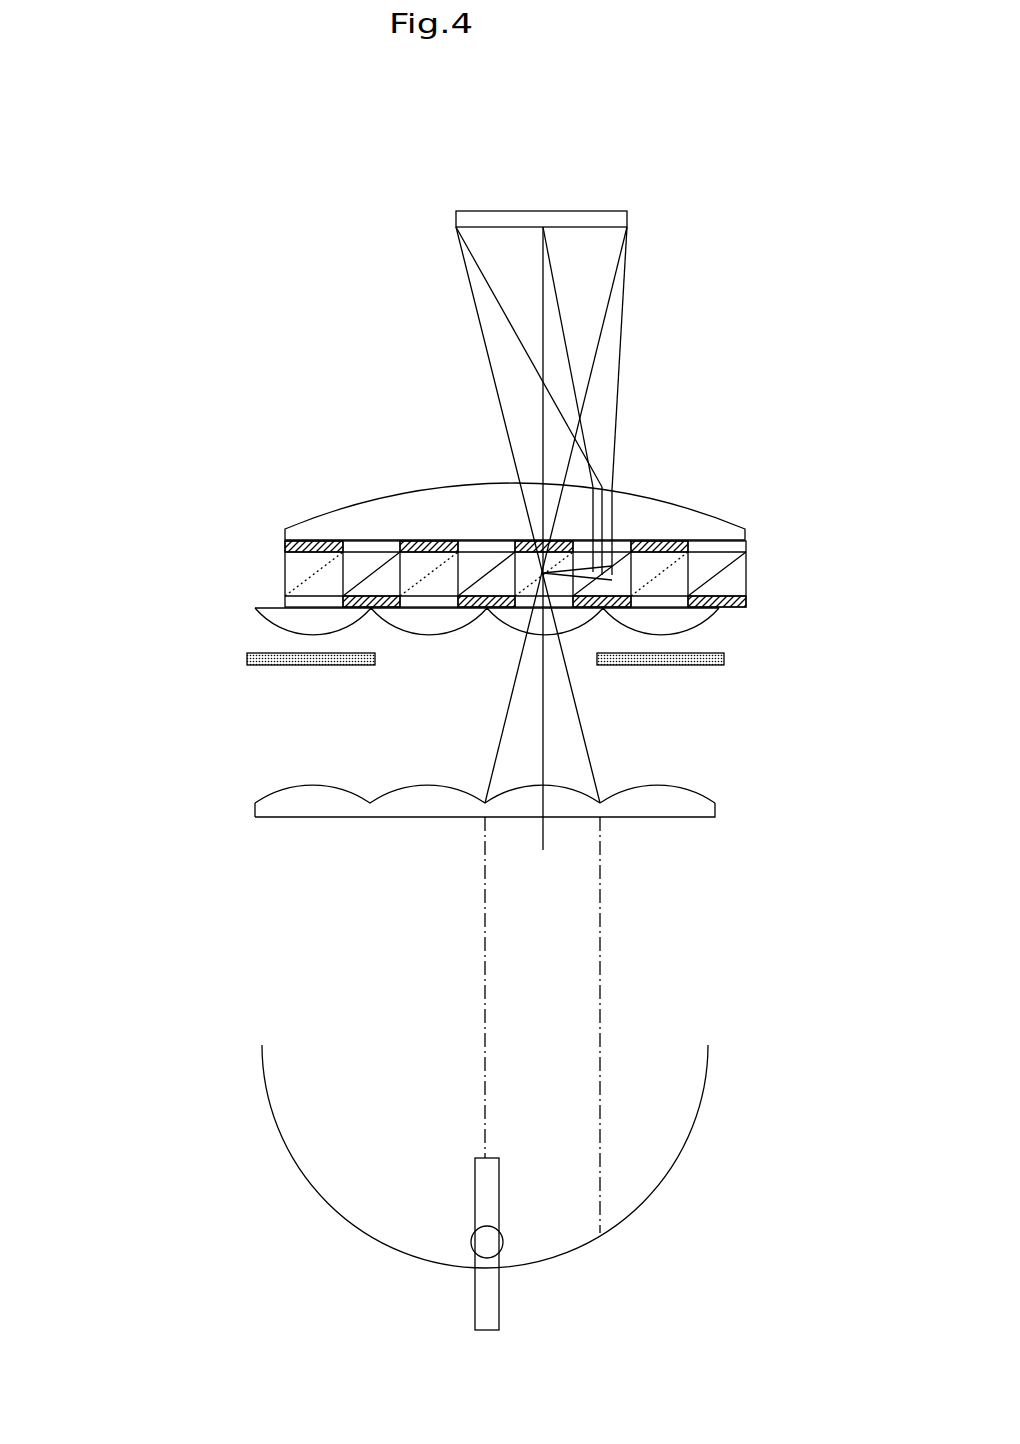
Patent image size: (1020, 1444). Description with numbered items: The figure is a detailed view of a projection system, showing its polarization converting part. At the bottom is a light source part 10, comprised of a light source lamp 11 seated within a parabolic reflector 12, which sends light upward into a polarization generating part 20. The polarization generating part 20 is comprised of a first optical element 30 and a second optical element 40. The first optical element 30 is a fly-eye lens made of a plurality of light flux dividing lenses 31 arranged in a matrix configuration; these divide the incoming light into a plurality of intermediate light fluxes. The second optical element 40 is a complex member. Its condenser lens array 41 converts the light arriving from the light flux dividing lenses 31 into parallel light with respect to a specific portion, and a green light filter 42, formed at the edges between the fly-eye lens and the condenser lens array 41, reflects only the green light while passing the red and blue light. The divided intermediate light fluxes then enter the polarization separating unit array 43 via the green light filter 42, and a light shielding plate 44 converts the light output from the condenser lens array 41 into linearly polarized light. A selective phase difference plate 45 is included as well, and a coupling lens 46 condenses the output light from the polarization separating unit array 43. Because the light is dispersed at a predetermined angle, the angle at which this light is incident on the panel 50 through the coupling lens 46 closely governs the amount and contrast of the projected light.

The light source part 10 is at (158, 1020).
The light source lamp 11 is at (487, 1242).
The parabolic reflector 12 is at (368, 1238).
The polarization generating part 20 is at (158, 483).
The first optical element 30 is at (560, 839).
The light flux dividing lens 31 is at (657, 805).
The second optical element 40 is at (528, 572).
The condenser lens array 41 is at (258, 609).
The green light filter 42 is at (247, 659).
The polarization separating unit array 43 is at (285, 568).
The light shielding plate 44 is at (580, 600).
The selective phase difference plate 45 is at (746, 542).
The coupling lens 46 is at (355, 504).
The panel 50 is at (627, 218).